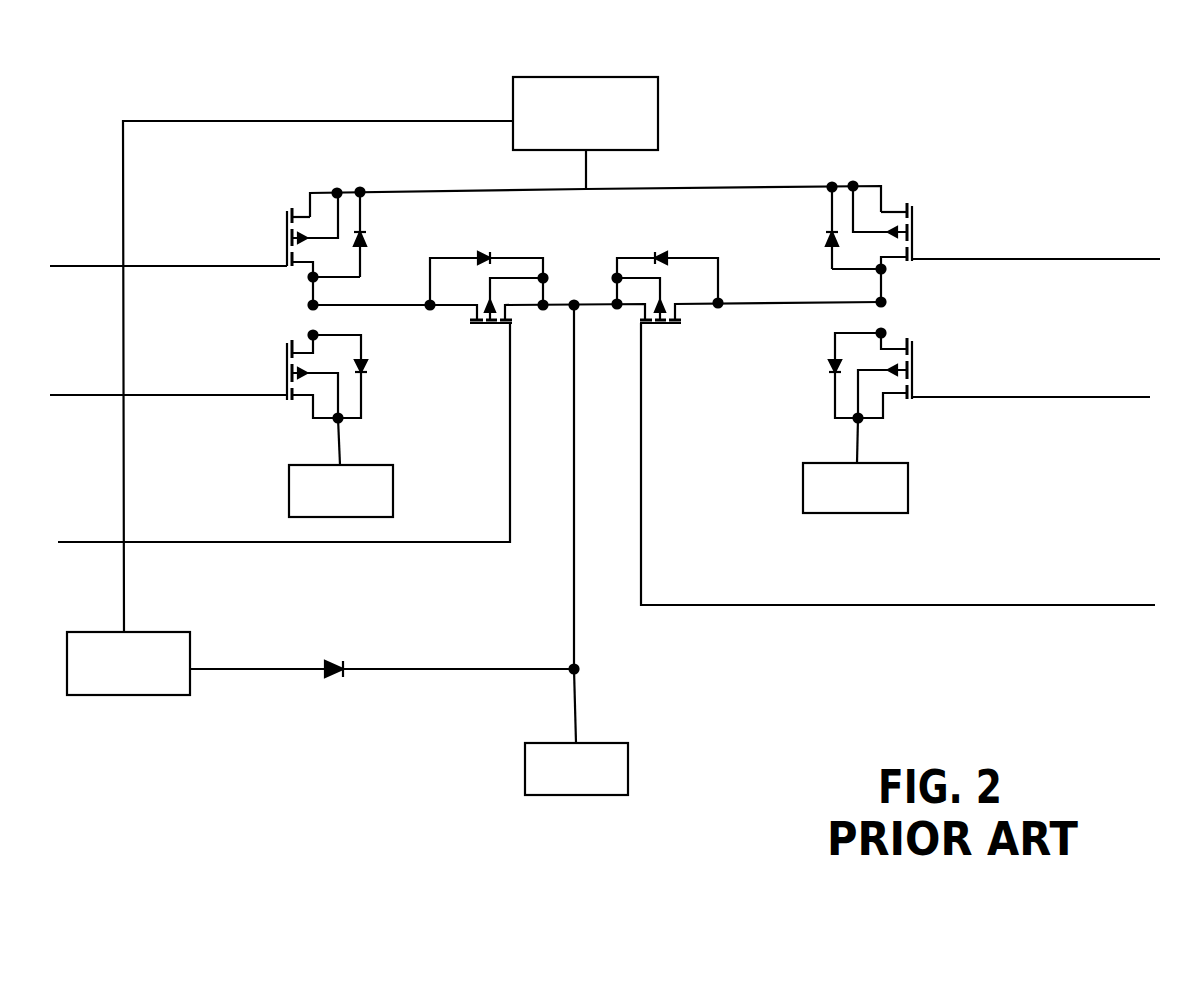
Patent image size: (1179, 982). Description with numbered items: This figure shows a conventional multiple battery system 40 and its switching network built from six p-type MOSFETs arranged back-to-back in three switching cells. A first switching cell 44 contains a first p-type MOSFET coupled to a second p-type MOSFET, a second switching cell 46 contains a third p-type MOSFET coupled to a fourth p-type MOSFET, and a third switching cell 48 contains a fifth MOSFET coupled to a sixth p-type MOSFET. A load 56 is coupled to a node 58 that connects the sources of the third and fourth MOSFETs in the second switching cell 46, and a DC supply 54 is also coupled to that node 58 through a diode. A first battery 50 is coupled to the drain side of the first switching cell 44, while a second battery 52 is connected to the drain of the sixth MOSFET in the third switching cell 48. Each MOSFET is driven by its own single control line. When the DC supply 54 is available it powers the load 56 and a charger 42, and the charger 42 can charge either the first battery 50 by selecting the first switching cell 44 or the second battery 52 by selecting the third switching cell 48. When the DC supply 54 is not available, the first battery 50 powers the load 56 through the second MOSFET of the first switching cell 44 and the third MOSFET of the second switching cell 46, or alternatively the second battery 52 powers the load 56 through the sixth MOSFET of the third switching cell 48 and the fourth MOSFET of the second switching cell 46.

The multiple battery system 40 is at (1012, 86).
The charger 42 is at (567, 77).
The first switching cell 44 is at (226, 208).
The second switching cell 46 is at (670, 362).
The third switching cell 48 is at (870, 143).
The first battery 50 is at (363, 465).
The second battery 52 is at (822, 463).
The DC supply 54 is at (158, 632).
The load 56 is at (612, 743).
The node 58 is at (570, 257).